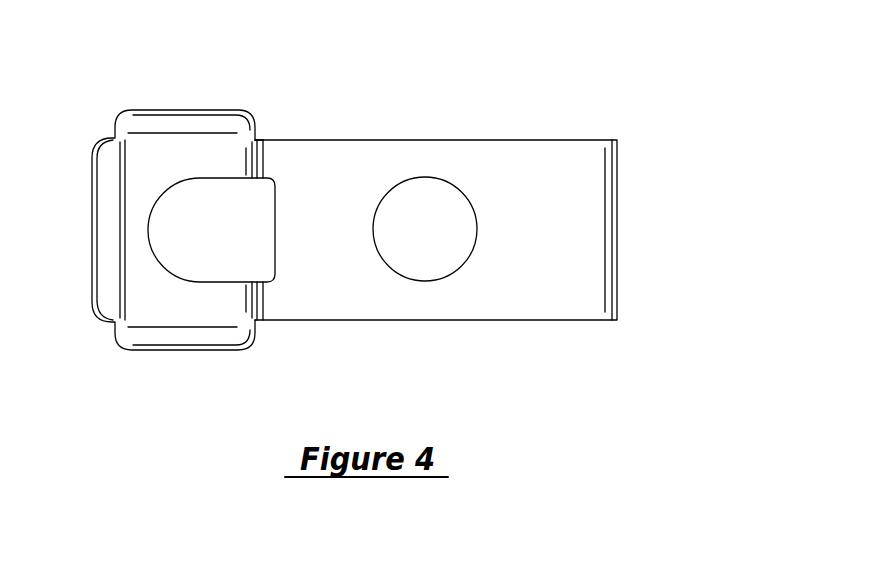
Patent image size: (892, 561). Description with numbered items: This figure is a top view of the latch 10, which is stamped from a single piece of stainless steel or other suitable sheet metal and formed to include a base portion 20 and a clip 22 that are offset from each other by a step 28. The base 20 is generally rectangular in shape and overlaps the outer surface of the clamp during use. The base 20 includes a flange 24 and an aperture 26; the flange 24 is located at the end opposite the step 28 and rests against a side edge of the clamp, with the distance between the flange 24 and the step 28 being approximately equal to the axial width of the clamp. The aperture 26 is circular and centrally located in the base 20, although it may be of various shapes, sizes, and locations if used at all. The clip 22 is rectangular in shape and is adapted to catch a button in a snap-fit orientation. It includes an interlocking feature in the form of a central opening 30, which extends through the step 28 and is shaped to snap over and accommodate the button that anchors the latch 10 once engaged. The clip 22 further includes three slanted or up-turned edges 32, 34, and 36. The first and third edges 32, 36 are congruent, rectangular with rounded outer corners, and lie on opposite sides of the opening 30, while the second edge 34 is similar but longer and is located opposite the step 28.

The latch 10 is at (381, 222).
The base portion 20 is at (528, 158).
The clip 22 is at (211, 223).
The flange 24 is at (607, 195).
The aperture 26 is at (430, 252).
The step 28 is at (253, 160).
The opening 30 is at (240, 252).
The first up-turned edge 32 is at (207, 335).
The second up-turned edge 34 is at (110, 253).
The third up-turned edge 36 is at (187, 125).